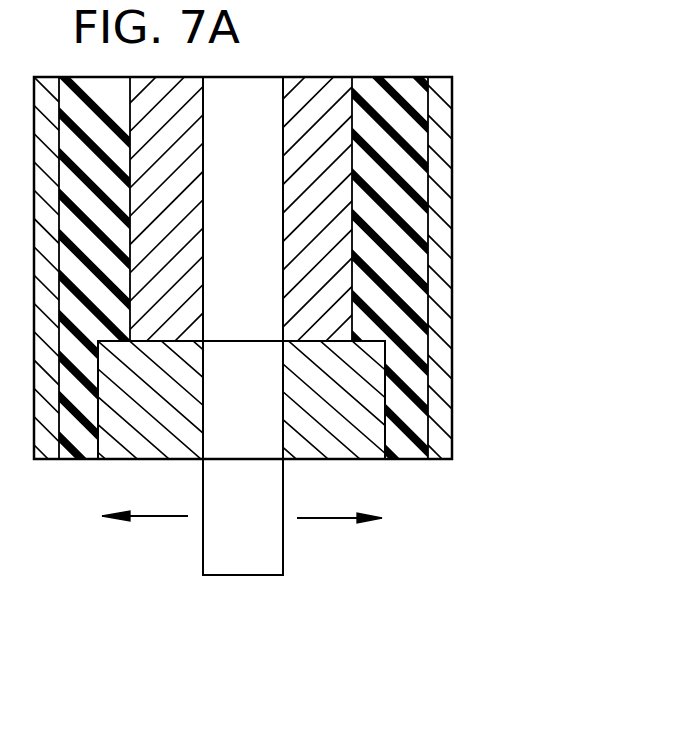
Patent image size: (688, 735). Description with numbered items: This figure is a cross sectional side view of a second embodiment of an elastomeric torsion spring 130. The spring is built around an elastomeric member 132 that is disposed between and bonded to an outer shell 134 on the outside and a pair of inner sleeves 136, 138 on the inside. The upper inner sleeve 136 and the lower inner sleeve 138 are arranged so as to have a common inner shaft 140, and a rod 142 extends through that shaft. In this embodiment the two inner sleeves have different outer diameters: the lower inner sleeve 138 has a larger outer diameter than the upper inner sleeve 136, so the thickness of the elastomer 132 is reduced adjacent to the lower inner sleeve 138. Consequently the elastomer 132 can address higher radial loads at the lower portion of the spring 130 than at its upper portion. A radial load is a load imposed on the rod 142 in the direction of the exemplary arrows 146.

The elastomeric torsion spring 130 is at (402, 62).
The elastomeric member 132 is at (415, 218).
The outer shell 134 is at (440, 155).
The upper inner sleeve 136 is at (330, 240).
The lower inner sleeve 138 is at (347, 447).
The common inner shaft 140 is at (264, 233).
The rod 142 is at (257, 557).
The arrows 146 is at (157, 517).